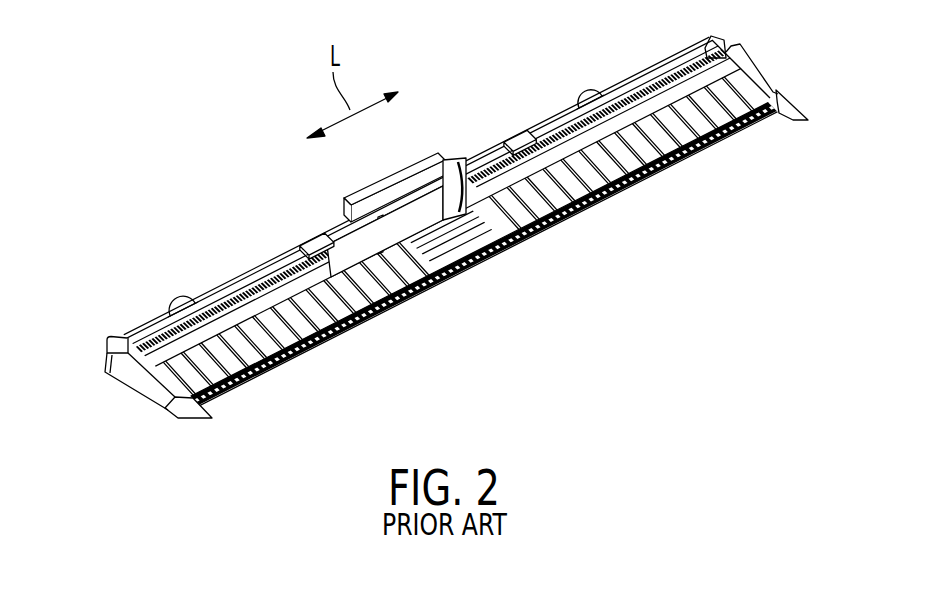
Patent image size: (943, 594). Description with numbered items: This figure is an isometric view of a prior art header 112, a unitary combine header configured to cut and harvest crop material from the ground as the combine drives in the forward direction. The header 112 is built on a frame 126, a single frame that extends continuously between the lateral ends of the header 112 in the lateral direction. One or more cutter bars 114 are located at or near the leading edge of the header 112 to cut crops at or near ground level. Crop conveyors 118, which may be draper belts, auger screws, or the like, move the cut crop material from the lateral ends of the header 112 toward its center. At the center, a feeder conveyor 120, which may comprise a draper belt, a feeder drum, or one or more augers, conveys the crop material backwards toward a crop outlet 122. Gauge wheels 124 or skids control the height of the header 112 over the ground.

The header 112 is at (456, 218).
The cutter bar 114 is at (567, 224).
The crop conveyors 118 is at (282, 340).
The feeder conveyor 120 is at (418, 247).
The crop outlet 122 is at (407, 208).
The gauge wheels 124 is at (180, 296).
The frame 126 is at (417, 194).